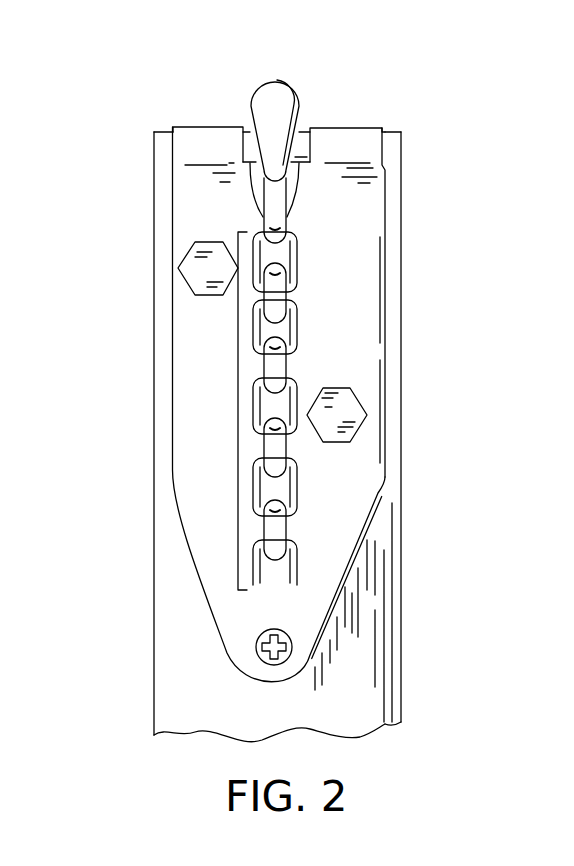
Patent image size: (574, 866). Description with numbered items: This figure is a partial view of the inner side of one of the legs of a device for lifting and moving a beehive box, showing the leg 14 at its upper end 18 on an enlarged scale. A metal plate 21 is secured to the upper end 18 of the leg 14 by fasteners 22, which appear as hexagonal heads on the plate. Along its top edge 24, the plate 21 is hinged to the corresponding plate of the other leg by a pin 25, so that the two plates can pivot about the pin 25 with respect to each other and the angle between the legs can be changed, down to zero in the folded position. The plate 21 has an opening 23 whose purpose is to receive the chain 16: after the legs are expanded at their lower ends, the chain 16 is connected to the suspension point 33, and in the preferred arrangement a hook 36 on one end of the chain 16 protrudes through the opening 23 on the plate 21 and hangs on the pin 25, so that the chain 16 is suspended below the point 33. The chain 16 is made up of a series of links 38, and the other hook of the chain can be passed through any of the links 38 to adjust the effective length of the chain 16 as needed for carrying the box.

The leg 14 is at (400, 583).
The chain 16 is at (301, 319).
The upper end 18 is at (152, 182).
The metal plate 21 is at (373, 205).
The fasteners 22 is at (179, 266).
The opening 23 is at (300, 180).
The top edge 24 is at (187, 124).
The pin 25 is at (305, 130).
The suspension point 33 is at (228, 94).
The hook 36 is at (277, 80).
The links 38 is at (238, 407).